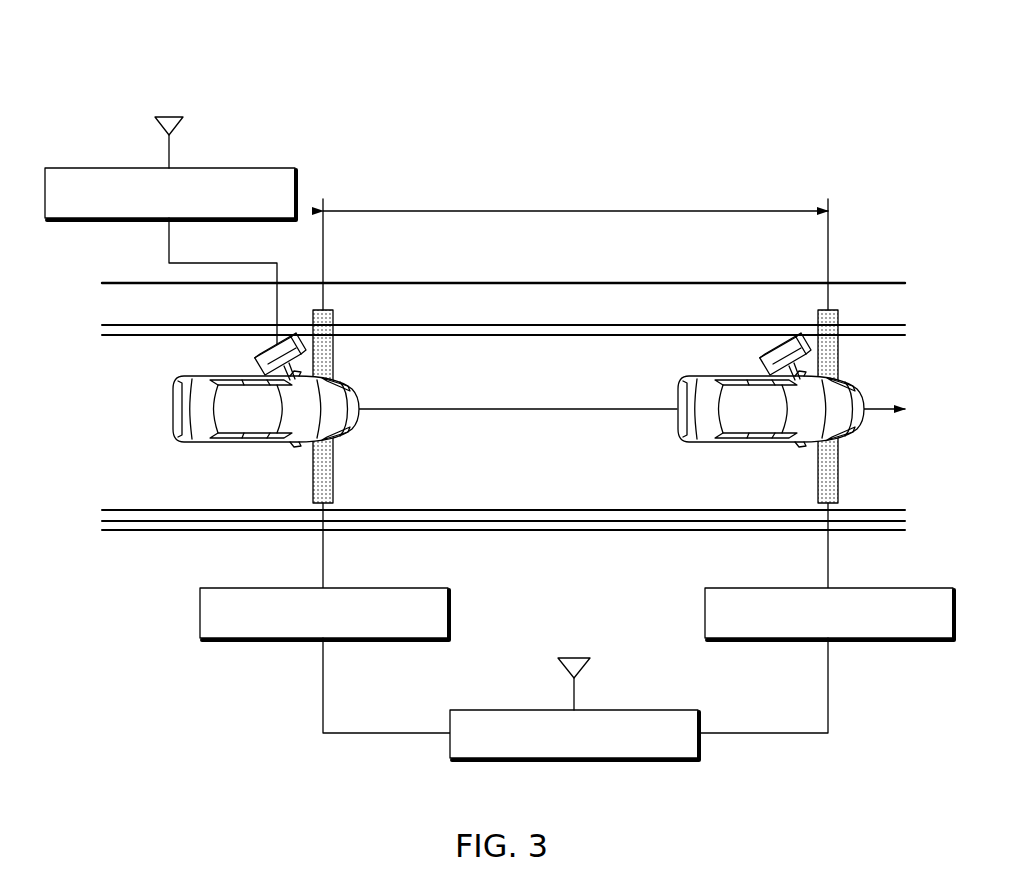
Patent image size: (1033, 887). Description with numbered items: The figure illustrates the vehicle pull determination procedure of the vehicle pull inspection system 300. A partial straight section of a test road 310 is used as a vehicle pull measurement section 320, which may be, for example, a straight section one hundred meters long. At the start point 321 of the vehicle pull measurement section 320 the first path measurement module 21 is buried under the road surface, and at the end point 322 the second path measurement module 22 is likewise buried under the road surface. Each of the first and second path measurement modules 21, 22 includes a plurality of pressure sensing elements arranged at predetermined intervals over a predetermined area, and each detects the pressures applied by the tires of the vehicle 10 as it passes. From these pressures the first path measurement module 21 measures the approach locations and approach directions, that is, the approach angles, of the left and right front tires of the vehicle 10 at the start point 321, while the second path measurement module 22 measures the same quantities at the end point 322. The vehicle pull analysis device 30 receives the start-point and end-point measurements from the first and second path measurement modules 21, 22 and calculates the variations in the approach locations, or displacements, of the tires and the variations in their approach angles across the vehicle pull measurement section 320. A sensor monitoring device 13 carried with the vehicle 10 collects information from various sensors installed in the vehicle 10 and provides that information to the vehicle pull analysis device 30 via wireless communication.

The vehicle pull measurement system 300 is at (350, 70).
The test road 310 is at (133, 482).
The vehicle pull measurement section 320 is at (582, 212).
The start point 321 is at (334, 320).
The end point 322 is at (839, 320).
The vehicle 10 is at (205, 440).
The sensor monitoring device 13 is at (261, 167).
The first path measurement module 21 is at (451, 612).
The second path measurement module 22 is at (704, 612).
The vehicle pull analysis device 30 is at (670, 710).